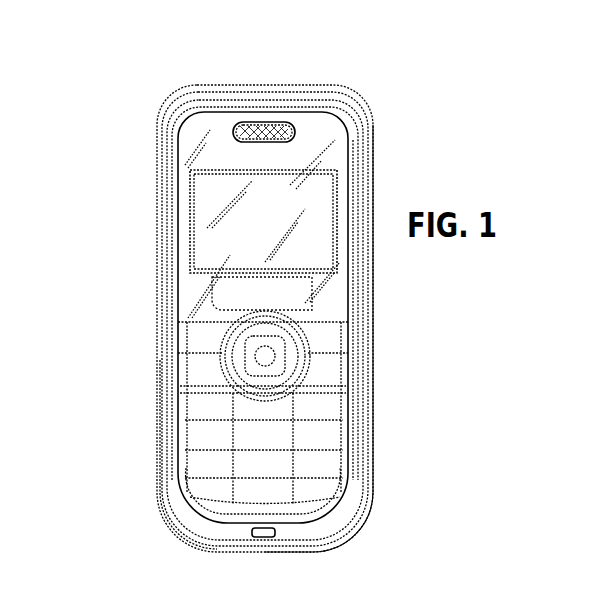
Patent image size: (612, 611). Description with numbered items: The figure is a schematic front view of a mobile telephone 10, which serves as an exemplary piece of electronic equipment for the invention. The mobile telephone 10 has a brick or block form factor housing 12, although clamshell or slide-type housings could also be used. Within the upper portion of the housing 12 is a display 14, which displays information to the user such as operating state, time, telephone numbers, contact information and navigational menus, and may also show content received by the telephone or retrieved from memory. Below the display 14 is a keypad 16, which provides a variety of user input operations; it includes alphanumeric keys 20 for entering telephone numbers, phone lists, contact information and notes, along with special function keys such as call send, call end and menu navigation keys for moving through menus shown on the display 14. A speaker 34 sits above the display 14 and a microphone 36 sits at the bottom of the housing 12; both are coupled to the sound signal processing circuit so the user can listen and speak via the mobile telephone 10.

The mobile telephone 10 is at (114, 92).
The housing 12 is at (158, 170).
The display 14 is at (205, 230).
The keypad 16 is at (157, 459).
The alphanumeric keys 20 is at (245, 368).
The speaker 34 is at (262, 122).
The microphone 36 is at (266, 540).